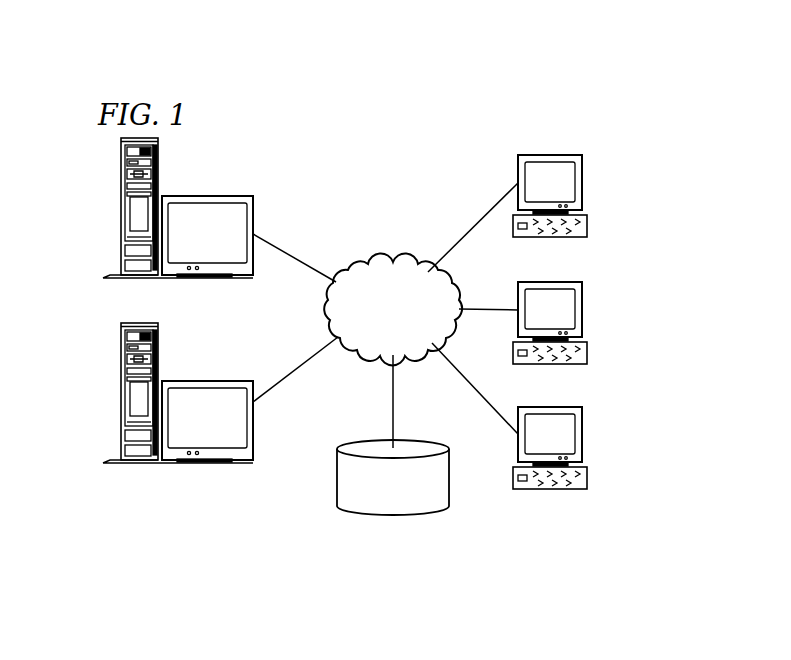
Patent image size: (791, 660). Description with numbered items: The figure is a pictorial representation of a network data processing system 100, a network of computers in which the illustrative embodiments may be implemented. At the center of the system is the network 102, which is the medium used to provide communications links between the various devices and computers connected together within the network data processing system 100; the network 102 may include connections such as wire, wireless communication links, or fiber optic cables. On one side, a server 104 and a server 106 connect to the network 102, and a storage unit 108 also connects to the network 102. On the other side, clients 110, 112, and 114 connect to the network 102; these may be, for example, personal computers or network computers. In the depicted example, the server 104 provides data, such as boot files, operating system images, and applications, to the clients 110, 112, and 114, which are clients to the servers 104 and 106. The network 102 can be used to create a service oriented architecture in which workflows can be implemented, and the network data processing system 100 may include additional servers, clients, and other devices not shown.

The network data processing system 100 is at (441, 162).
The network 102 is at (368, 264).
The server 104 is at (121, 208).
The server 106 is at (121, 395).
The storage unit 108 is at (378, 515).
The client 110 is at (582, 183).
The client 112 is at (582, 309).
The client 114 is at (582, 436).